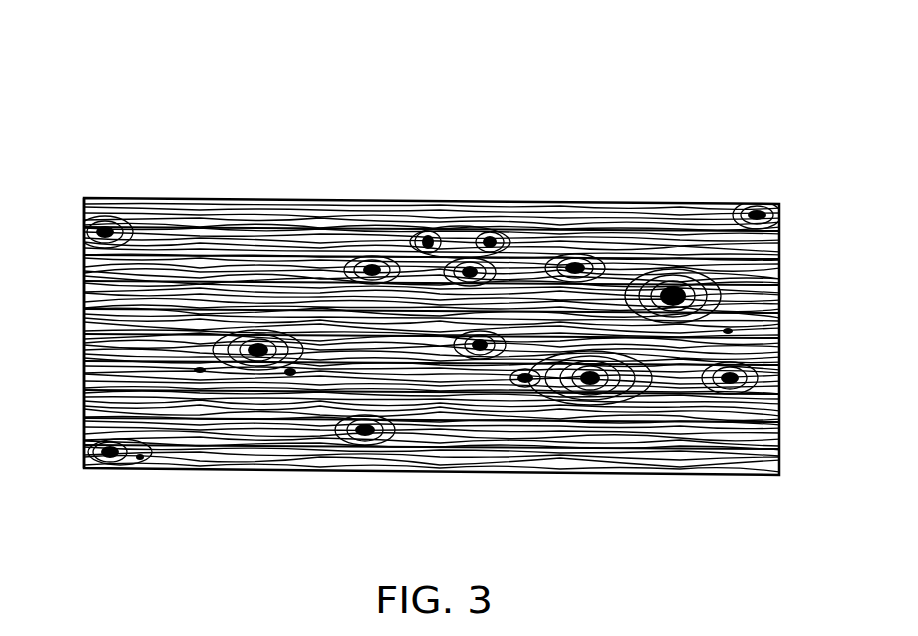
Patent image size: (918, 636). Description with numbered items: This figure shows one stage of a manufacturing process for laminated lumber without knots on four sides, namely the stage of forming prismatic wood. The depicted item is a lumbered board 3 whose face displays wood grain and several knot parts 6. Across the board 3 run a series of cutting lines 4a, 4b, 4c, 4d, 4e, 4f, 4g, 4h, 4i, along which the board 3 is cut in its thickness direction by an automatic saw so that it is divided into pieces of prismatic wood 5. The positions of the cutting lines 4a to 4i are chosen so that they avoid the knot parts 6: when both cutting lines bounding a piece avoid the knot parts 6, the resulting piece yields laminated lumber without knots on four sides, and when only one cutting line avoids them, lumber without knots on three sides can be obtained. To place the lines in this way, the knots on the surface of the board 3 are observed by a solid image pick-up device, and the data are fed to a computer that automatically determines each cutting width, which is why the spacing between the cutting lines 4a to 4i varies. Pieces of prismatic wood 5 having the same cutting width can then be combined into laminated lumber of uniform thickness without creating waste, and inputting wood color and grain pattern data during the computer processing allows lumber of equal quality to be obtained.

The board 3 is at (334, 95).
The cutting line 4a is at (781, 231).
The cutting line 4b is at (781, 258).
The cutting line 4c is at (781, 285).
The cutting line 4d is at (781, 312).
The cutting line 4e is at (781, 337).
The cutting line 4f is at (781, 364).
The cutting line 4g is at (781, 393).
The cutting line 4h is at (781, 421).
The cutting line 4i is at (781, 447).
The prismatic wood 5 is at (83, 287).
The knot parts 6 is at (677, 291).